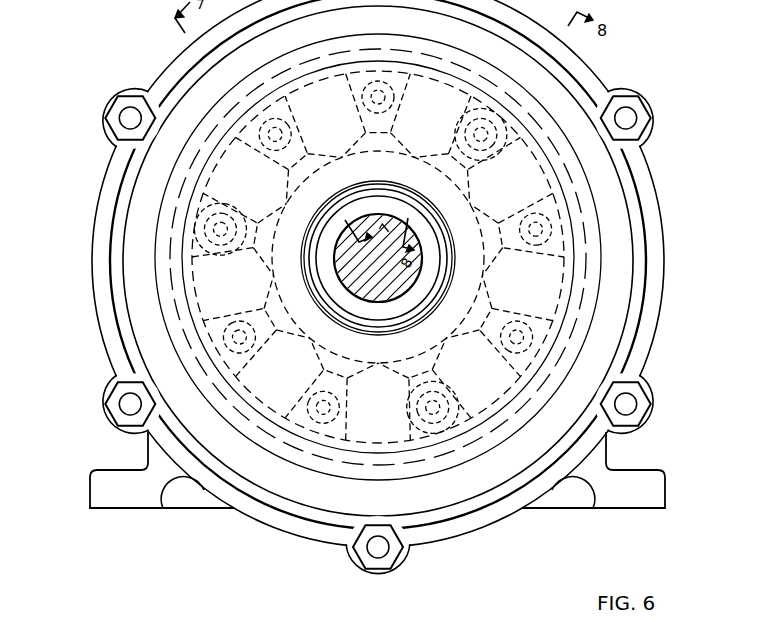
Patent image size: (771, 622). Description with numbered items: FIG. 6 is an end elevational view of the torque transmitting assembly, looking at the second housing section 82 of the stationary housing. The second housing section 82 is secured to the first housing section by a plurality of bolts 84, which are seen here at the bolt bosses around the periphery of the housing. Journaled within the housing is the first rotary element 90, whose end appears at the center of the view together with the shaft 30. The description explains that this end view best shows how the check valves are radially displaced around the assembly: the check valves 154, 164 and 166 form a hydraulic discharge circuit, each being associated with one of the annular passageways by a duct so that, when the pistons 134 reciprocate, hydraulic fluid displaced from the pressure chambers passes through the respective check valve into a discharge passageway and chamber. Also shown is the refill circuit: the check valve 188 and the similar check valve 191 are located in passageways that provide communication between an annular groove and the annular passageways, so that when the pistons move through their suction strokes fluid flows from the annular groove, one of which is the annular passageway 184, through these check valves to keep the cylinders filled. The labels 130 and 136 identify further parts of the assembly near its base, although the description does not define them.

The shaft 30 is at (389, 293).
The second housing section 82 is at (104, 190).
The bolts 84 is at (134, 100).
The first rotary element 90 is at (377, 527).
The lower housing element 130 is at (302, 621).
The pistons 134 is at (459, 612).
The lower housing element 136 is at (245, 621).
The check valve 154 is at (262, 125).
The check valve 164 is at (310, 424).
The check valve 166 is at (553, 232).
The annular groove or passageway 184 is at (222, 344).
The check valve 188 is at (380, 78).
The check valve 191 is at (534, 342).